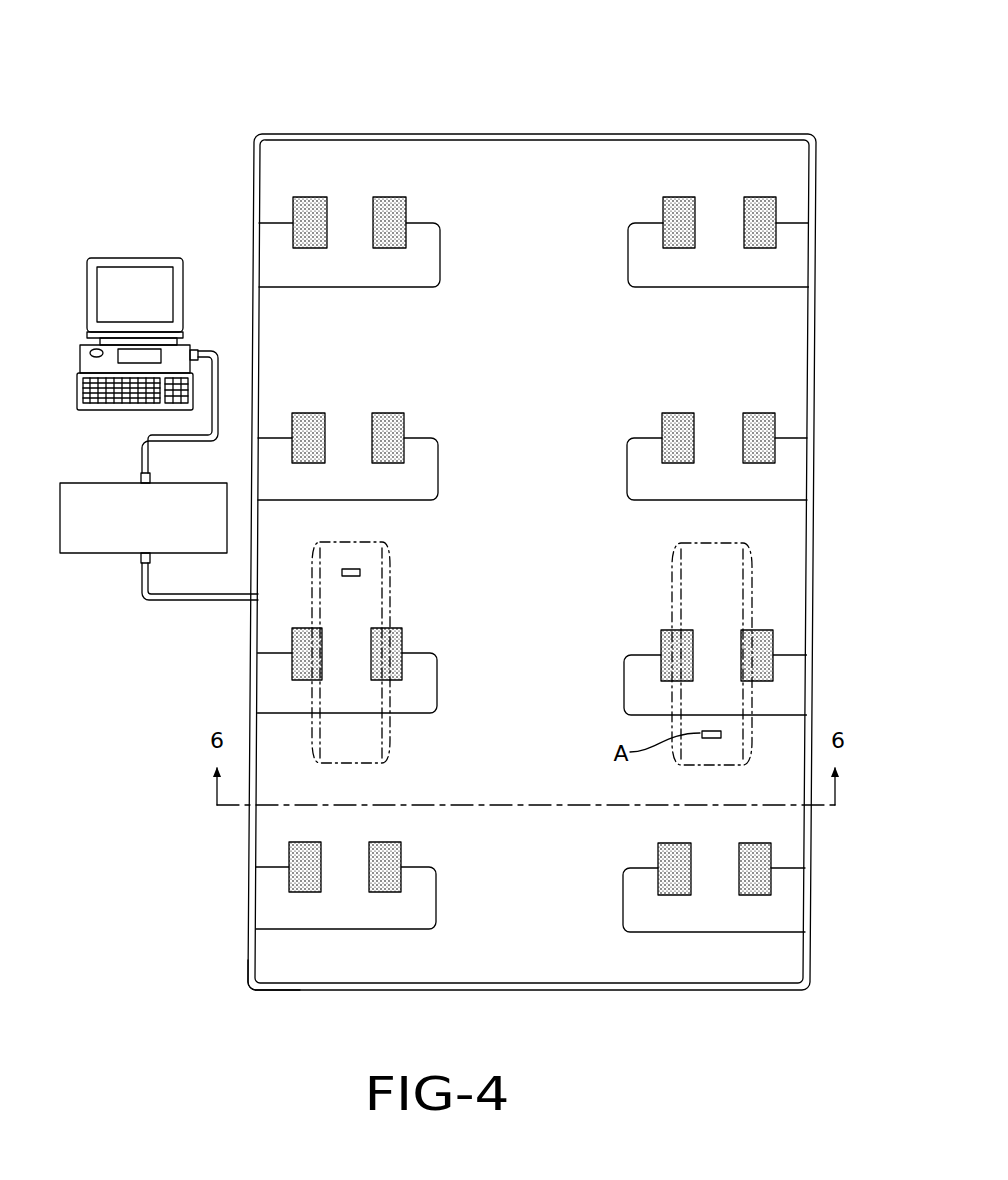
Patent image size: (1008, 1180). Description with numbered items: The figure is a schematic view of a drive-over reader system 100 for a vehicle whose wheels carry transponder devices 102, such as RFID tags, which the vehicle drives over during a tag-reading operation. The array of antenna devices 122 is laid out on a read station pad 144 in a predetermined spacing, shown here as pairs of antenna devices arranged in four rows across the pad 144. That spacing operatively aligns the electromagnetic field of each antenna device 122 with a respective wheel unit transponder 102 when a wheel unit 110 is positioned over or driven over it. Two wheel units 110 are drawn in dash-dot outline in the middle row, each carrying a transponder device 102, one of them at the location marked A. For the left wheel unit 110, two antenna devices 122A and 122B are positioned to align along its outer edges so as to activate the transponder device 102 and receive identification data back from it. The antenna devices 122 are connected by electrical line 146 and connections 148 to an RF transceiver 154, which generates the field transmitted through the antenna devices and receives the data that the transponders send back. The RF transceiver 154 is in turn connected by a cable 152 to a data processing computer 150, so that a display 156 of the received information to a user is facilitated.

The drive-over reader system 100 is at (650, 101).
The transponder device 102 is at (355, 578).
The wheel unit 110 is at (360, 733).
The antenna device 122 is at (668, 855).
The antenna device 122A is at (305, 655).
The antenna device 122B is at (392, 650).
The read station pad 144 is at (457, 962).
The electrical line 146 is at (253, 989).
The connections 148 is at (200, 600).
The data processing computer 150 is at (98, 410).
The cable 152 is at (157, 443).
The RF transceiver 154 is at (87, 553).
The display 156 is at (138, 278).